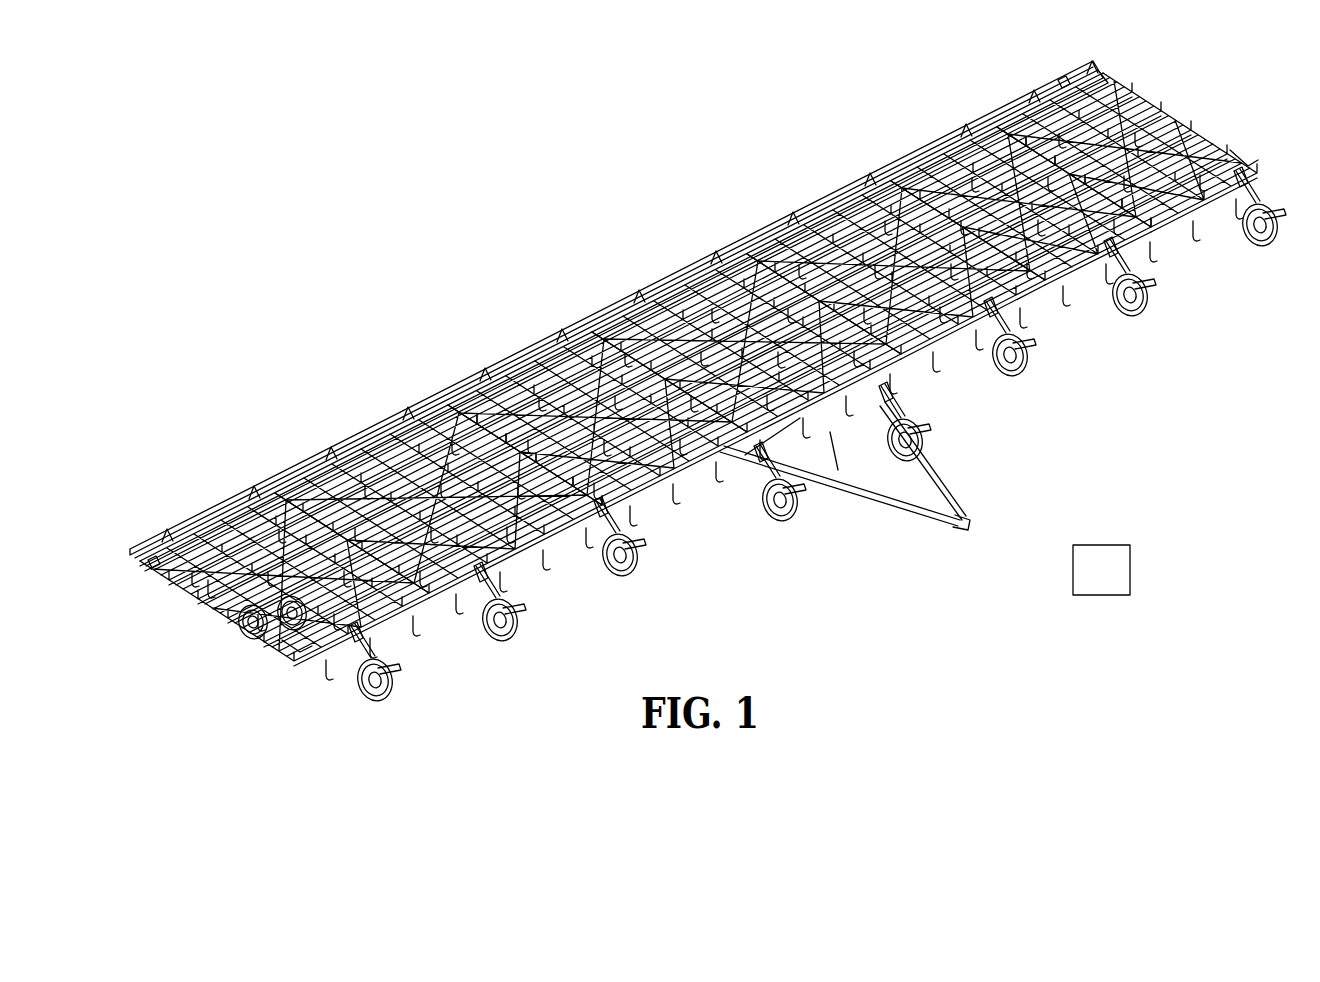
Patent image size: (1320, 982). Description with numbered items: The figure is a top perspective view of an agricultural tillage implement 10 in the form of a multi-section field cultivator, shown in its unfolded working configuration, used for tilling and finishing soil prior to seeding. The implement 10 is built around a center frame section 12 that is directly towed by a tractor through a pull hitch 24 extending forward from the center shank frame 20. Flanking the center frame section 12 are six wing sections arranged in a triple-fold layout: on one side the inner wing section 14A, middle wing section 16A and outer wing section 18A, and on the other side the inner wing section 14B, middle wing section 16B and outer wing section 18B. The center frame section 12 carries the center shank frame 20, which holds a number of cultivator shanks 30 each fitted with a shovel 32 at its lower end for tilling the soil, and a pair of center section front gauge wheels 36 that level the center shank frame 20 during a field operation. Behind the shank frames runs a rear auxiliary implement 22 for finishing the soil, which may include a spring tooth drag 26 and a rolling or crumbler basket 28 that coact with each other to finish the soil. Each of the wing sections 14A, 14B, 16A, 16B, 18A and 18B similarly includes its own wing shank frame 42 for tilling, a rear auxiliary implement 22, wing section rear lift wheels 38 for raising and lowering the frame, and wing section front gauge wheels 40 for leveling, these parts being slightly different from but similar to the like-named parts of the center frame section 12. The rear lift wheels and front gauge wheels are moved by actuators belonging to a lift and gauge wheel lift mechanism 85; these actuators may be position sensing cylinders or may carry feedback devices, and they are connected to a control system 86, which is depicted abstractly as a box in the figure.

The agricultural tillage implement 10 is at (578, 156).
The center frame section 12 is at (676, 243).
The inner wing section 14A is at (789, 208).
The inner wing section 14B is at (522, 343).
The middle wing section 16A is at (912, 133).
The middle wing section 16B is at (345, 428).
The outer wing section 18A is at (1028, 77).
The outer wing section 18B is at (183, 517).
The center shank frame 20 is at (728, 522).
The rear auxiliary implement 22 is at (625, 298).
The pull hitch 24 is at (952, 496).
The spring tooth drag 26 is at (210, 597).
The rolling basket 28 is at (142, 562).
The cultivator shank 30 is at (572, 540).
The shovel 32 is at (590, 560).
The center section front gauge wheel 36 is at (795, 525).
The wing section rear lift wheel 38 is at (252, 643).
The wing section front gauge wheel 40 is at (374, 700).
The wing shank frame 42 is at (290, 650).
The lift and gauge wheel lift mechanism 85 is at (1255, 192).
The control system 86 is at (920, 465).